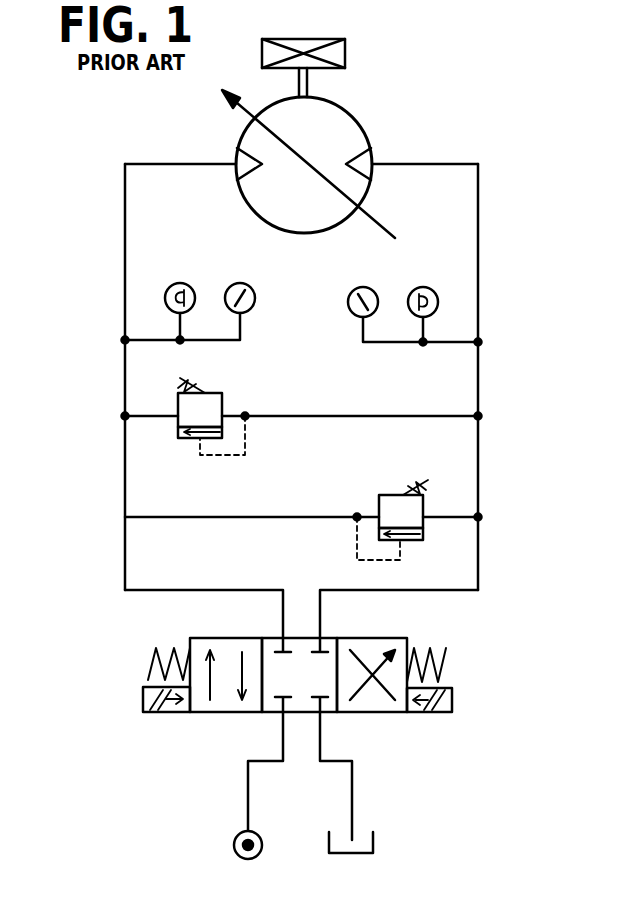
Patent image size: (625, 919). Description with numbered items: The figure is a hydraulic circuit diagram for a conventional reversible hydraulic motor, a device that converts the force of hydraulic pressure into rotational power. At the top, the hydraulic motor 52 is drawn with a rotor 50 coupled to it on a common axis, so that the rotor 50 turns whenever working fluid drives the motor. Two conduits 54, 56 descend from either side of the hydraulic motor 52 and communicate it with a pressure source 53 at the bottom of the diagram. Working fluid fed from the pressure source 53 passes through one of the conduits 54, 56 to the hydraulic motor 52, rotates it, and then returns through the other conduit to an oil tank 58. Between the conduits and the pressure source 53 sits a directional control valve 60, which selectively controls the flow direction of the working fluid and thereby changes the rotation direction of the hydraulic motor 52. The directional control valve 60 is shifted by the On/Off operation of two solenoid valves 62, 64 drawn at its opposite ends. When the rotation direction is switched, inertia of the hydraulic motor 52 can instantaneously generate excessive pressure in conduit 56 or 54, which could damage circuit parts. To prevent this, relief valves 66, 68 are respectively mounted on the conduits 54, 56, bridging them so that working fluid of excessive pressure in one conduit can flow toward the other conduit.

The rotor 50 is at (345, 44).
The hydraulic motor 52 is at (355, 117).
The pressure source 53 is at (234, 845).
The conduit 54 is at (137, 373).
The conduit 56 is at (478, 374).
The oil tank 58 is at (373, 836).
The directional control valve 60 is at (363, 720).
The solenoid valve 62 is at (152, 715).
The solenoid valve 64 is at (440, 683).
The relief valve 66 is at (232, 407).
The relief valve 68 is at (370, 503).